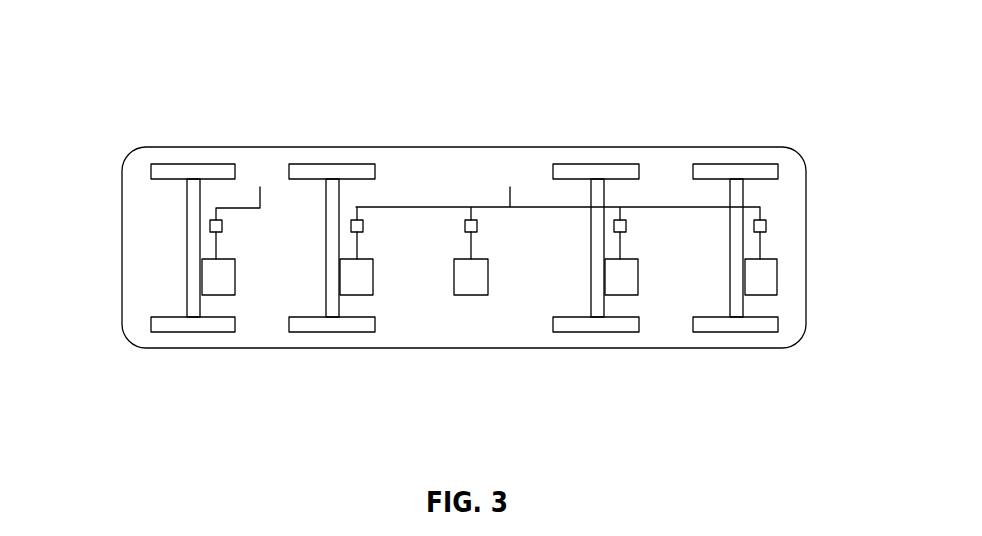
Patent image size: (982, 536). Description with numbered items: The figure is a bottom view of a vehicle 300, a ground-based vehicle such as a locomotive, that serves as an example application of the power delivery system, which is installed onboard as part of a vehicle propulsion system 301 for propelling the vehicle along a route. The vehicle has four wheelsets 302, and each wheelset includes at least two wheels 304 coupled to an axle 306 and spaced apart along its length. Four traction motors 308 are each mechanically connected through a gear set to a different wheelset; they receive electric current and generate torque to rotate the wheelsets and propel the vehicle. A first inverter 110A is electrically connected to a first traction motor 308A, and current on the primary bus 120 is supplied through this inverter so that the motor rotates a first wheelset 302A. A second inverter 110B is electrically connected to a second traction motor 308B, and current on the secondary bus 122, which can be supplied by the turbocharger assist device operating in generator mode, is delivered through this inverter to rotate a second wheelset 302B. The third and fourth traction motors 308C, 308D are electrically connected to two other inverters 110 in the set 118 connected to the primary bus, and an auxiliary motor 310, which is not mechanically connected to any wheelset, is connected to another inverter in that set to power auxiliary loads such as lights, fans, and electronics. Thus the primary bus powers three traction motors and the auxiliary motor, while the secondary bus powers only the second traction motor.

The vehicle 300 is at (247, 54).
The vehicle propulsion system 301 is at (486, 166).
The wheelsets 302 is at (433, 268).
The first wheelset 302A is at (333, 340).
The second wheelset 302B is at (140, 249).
The wheels 304 is at (162, 171).
The axle 306 is at (193, 197).
The traction motors 308 is at (169, 317).
The first traction motor 308A is at (371, 283).
The second traction motor 308B is at (228, 289).
The third traction motor 308C is at (628, 288).
The fourth traction motor 308D is at (761, 275).
The auxiliary motor 310 is at (472, 295).
The inverters 110 is at (477, 227).
The first inverter 110A is at (364, 229).
The second inverter 110B is at (210, 226).
The set of inverters 118 is at (788, 247).
The primary bus 120 is at (420, 205).
The secondary bus 122 is at (254, 192).